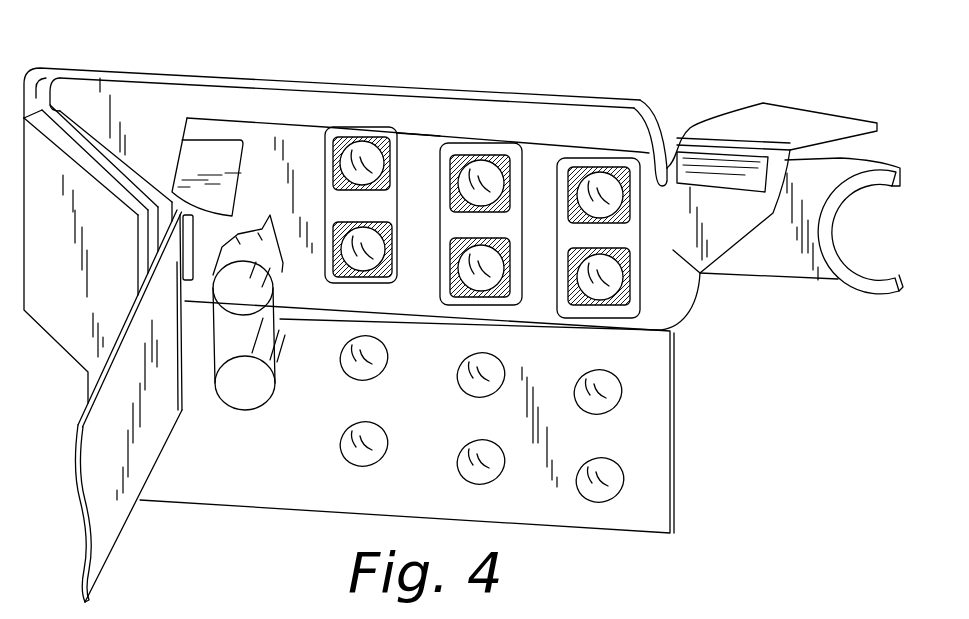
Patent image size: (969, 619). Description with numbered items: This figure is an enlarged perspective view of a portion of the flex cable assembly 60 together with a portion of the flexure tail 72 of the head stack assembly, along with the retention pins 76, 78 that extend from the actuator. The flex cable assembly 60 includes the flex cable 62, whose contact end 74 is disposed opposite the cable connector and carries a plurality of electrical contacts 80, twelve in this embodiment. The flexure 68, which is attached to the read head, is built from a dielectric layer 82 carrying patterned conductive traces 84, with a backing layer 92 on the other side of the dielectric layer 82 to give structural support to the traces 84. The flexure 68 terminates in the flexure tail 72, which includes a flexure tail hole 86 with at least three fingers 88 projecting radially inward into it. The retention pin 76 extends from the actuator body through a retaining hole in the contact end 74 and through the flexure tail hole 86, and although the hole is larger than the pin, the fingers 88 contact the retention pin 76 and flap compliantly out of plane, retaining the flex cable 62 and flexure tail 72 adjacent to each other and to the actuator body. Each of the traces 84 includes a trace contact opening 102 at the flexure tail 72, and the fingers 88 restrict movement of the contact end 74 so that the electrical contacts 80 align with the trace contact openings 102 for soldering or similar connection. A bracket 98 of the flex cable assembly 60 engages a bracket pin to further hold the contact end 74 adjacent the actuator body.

The flex cable assembly 60 is at (110, 556).
The flex cable 62 is at (83, 537).
The flexure 68 is at (800, 122).
The flexure tail 72 is at (700, 273).
The contact end 74 is at (540, 122).
The retention pin 76 is at (260, 288).
The retention pin 78 is at (246, 400).
The electrical contacts 80 is at (373, 152).
The dielectric layer 82 is at (178, 174).
The conductive traces 84 is at (340, 140).
The flexure tail hole 86 is at (300, 275).
The fingers 88 is at (271, 220).
The backing layer 92 is at (421, 145).
The bracket 98 is at (785, 262).
The trace contact opening 102 is at (361, 133).